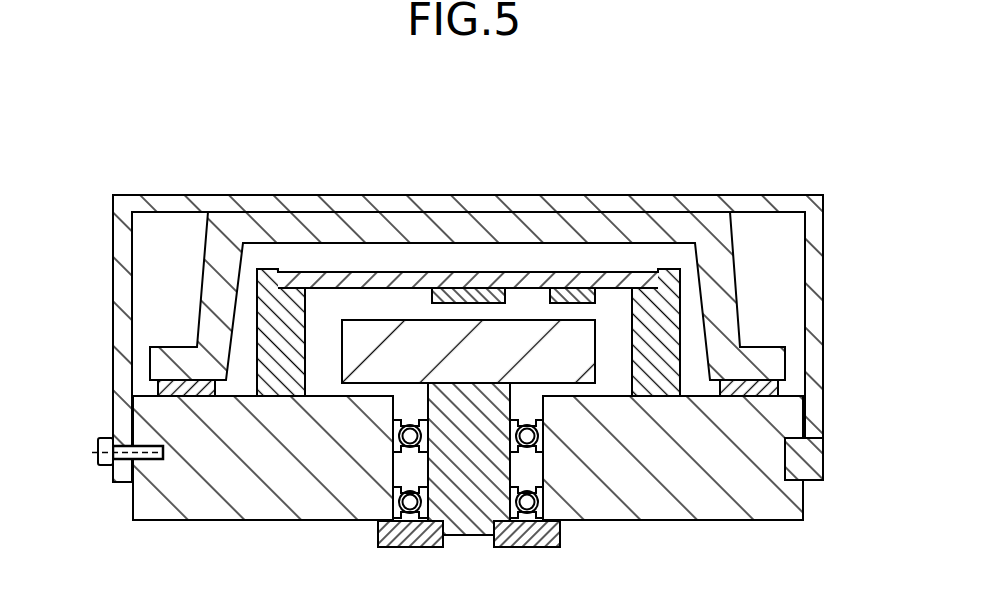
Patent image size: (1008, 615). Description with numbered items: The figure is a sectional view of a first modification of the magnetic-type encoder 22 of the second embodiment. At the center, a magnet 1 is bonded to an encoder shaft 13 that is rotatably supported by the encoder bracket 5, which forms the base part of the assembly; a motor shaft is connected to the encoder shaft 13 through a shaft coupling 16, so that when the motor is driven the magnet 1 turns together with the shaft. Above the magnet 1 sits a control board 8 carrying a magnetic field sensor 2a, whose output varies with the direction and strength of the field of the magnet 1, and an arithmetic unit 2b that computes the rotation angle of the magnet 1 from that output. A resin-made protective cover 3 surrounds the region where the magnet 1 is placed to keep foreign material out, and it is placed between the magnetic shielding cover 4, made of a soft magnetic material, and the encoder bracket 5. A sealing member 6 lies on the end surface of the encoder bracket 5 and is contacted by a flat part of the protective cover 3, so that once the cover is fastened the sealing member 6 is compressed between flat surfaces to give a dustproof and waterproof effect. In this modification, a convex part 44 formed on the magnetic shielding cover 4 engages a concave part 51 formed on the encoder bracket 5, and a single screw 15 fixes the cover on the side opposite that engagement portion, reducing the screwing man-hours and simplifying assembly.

The encoder 22 is at (170, 154).
The magnet 1 is at (405, 350).
The magnetic field sensor 2a is at (463, 290).
The arithmetic unit 2b is at (570, 290).
The control board 8 is at (517, 280).
The protective cover 3 is at (702, 227).
The magnetic shielding cover 4 is at (783, 203).
The encoder bracket 5 is at (251, 506).
The sealing member 6 is at (750, 387).
The encoder shaft 13 is at (464, 505).
The screw 15 is at (98, 442).
The shaft coupling 16 is at (520, 533).
The convex part 44 is at (800, 460).
The concave part 51 is at (795, 485).